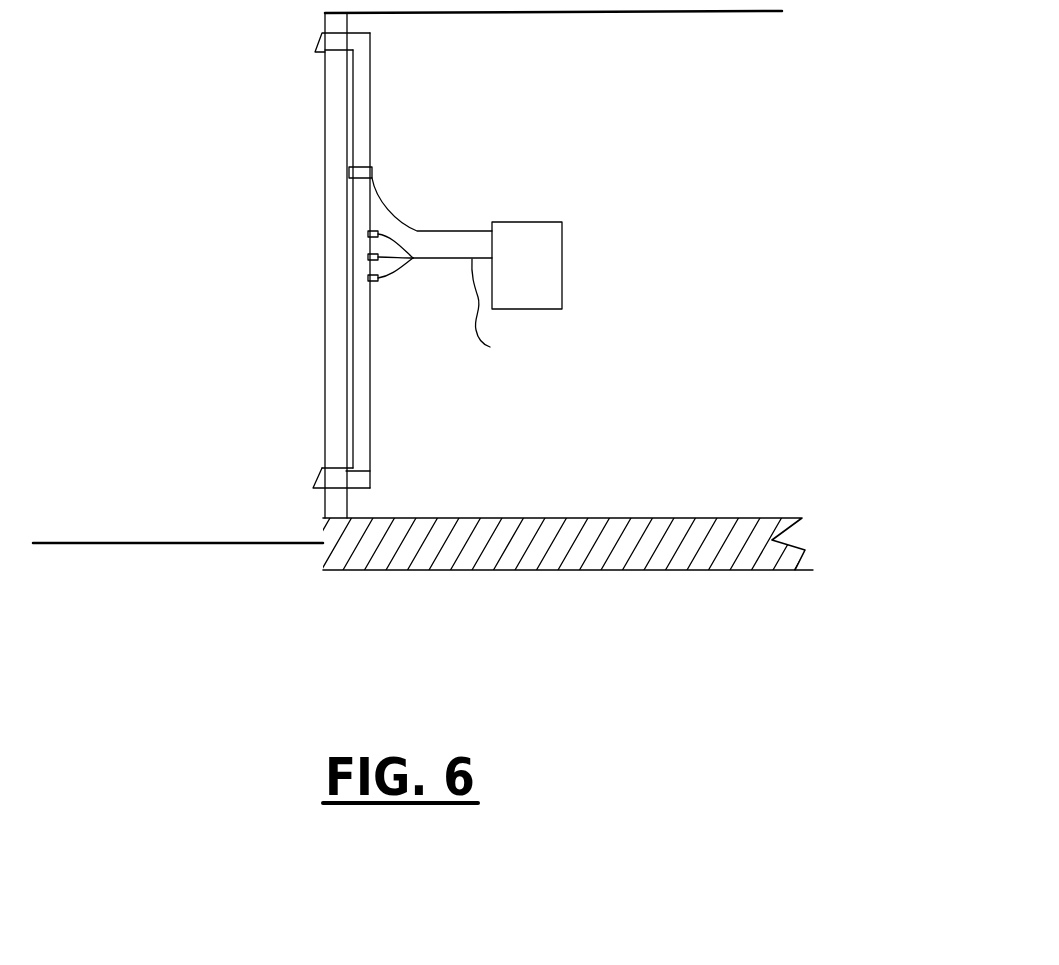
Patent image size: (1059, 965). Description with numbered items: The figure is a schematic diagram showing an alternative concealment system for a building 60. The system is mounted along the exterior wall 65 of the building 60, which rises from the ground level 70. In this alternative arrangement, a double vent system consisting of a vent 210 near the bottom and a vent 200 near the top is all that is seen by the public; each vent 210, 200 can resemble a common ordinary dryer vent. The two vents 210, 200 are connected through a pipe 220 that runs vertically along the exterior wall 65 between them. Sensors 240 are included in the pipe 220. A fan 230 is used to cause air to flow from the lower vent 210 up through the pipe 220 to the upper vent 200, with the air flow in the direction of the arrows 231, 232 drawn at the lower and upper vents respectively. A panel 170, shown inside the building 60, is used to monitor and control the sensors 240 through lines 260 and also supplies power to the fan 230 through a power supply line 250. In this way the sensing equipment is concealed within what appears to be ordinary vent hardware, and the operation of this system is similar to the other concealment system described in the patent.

The building 60 is at (696, 100).
The exterior wall 65 is at (314, 393).
The ground level 70 is at (140, 543).
The panel 170 is at (567, 262).
The vent 200 is at (310, 42).
The vent 210 is at (307, 480).
The pipe 220 is at (375, 410).
The fan 230 is at (380, 172).
The arrow 231 is at (316, 467).
The arrow 232 is at (307, 61).
The sensors 240 is at (378, 285).
The power supply 250 is at (420, 223).
The wires 260 is at (503, 310).